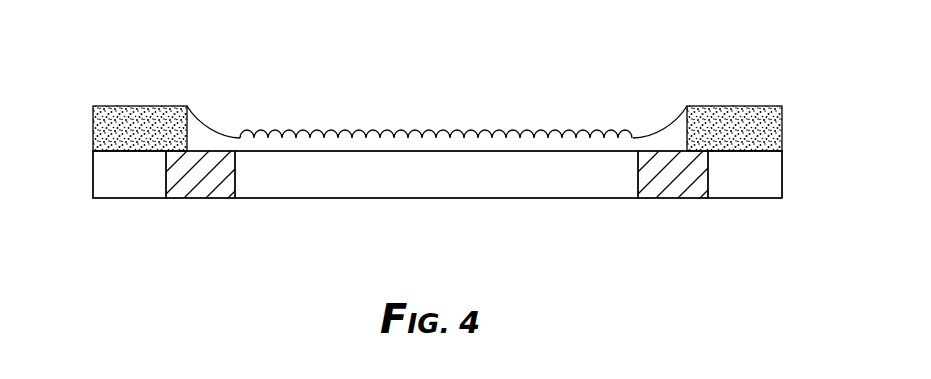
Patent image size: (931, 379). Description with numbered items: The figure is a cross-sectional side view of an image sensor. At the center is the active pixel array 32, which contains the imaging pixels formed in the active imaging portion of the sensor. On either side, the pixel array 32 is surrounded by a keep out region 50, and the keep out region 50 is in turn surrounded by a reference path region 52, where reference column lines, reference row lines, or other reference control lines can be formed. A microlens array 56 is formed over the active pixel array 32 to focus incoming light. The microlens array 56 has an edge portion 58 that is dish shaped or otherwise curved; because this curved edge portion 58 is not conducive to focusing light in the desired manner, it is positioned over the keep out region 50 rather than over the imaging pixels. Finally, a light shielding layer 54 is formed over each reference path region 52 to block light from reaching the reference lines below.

The pixel array 32 is at (233, 210).
The keep out region 50 is at (195, 212).
The reference path region 52 is at (165, 210).
The light shielding layer 54 is at (93, 117).
The microlens array 56 is at (303, 129).
The edge portion 58 is at (212, 112).